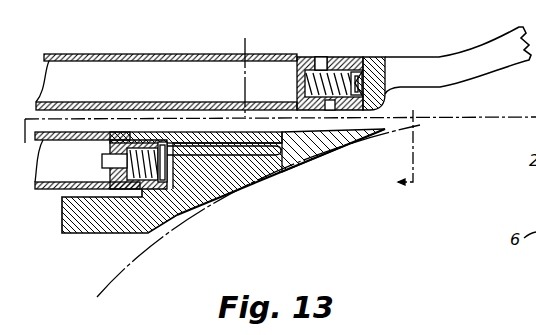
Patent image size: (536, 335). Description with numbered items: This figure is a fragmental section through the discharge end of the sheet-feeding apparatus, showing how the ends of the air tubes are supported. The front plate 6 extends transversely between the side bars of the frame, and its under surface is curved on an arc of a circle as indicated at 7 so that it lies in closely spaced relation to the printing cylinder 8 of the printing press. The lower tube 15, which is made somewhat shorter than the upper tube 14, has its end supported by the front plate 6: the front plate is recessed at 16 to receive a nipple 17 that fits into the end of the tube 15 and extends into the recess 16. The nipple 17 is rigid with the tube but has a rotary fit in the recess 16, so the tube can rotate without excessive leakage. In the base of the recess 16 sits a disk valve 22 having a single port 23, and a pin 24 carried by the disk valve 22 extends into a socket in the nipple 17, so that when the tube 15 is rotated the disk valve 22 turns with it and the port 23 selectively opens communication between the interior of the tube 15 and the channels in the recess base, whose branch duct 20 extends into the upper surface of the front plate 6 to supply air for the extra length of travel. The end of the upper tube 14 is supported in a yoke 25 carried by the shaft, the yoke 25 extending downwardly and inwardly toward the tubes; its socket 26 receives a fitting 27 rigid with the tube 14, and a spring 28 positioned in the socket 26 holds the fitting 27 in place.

The front plate 6 is at (253, 178).
The curved under surface 7 is at (160, 228).
The printing cylinder 8 is at (452, 124).
The tube 14 is at (111, 37).
The lower tube 15 is at (46, 209).
The recess 16 is at (148, 135).
The nipple 17 is at (110, 147).
The branch duct 20 is at (297, 150).
The disk valve 22 is at (170, 172).
The port 23 is at (195, 133).
The pin 24 is at (157, 181).
The yoke 25 is at (419, 62).
The socket 26 is at (361, 68).
The fitting 27 is at (297, 84).
The spring 28 is at (331, 66).